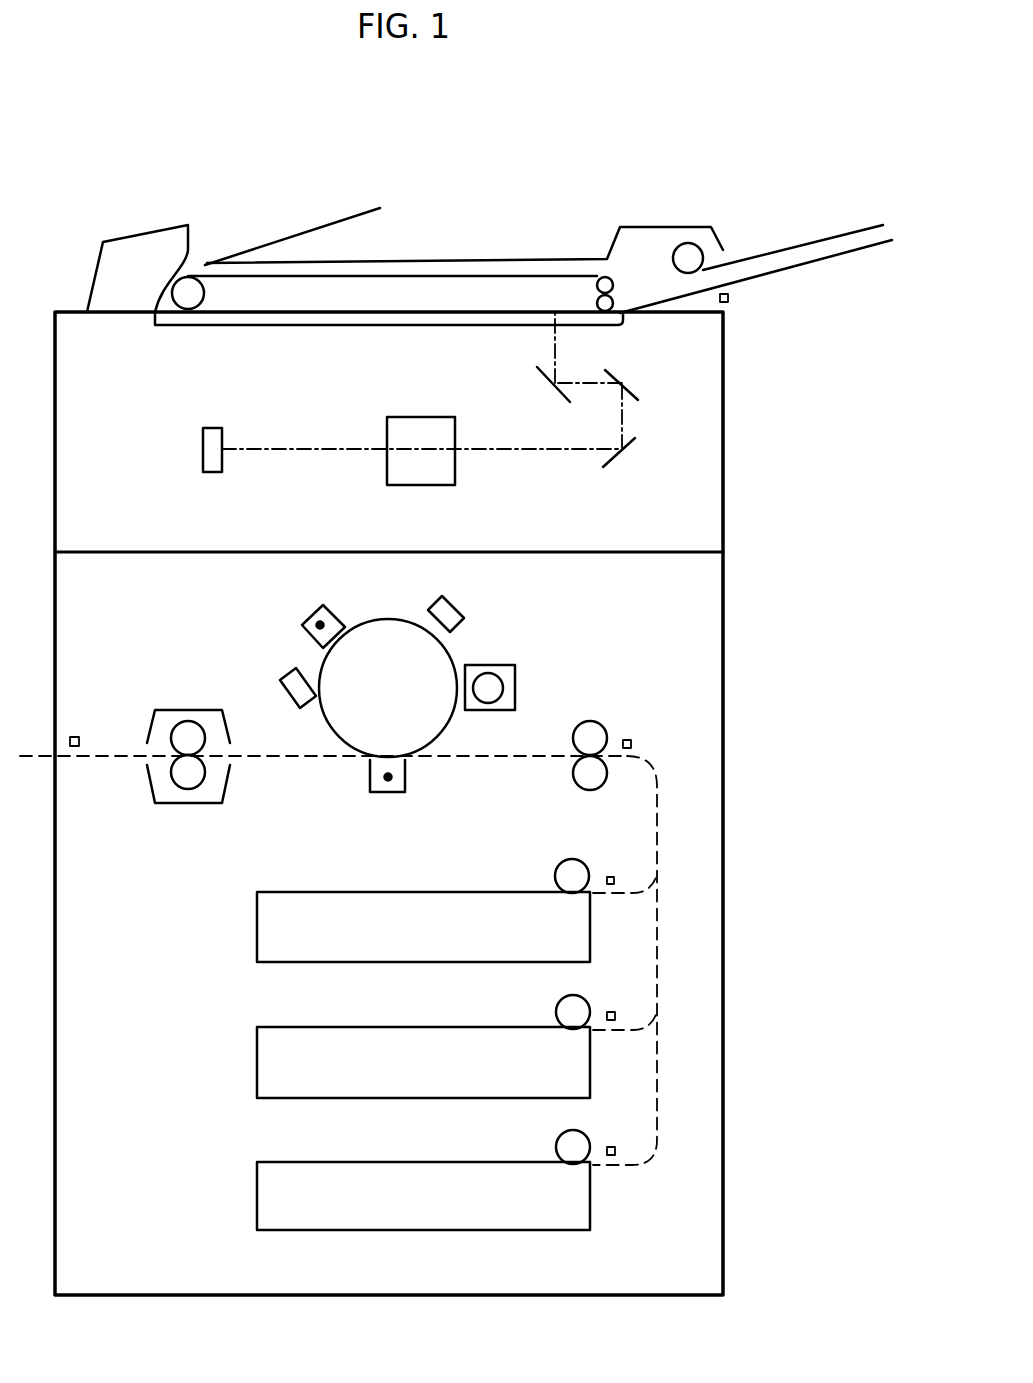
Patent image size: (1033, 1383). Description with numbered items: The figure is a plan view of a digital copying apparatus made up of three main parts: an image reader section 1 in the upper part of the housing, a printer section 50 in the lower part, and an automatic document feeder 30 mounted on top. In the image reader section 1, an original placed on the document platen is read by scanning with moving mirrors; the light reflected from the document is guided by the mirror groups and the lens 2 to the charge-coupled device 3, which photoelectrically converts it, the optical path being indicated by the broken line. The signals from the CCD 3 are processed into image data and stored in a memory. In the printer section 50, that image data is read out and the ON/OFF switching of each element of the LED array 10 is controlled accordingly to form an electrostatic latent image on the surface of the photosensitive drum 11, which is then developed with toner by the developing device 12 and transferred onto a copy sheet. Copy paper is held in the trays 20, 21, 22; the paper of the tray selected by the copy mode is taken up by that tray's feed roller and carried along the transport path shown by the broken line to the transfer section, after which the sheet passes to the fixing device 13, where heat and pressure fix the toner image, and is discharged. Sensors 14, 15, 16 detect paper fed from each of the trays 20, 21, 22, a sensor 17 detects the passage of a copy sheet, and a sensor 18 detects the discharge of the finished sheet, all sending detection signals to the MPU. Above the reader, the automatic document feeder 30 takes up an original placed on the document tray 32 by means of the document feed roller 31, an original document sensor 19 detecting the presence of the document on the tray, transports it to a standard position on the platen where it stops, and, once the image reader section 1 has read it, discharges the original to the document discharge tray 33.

The image reader section 1 is at (707, 437).
The lens 2 is at (422, 422).
The charge-coupled device (CCD) 3 is at (215, 430).
The LED array 10 is at (450, 618).
The photosensitive drum 11 is at (404, 706).
The developing device 12 is at (515, 698).
The fixing device 13 is at (168, 723).
The sensor 14 is at (613, 877).
The sensor 15 is at (612, 1012).
The sensor 16 is at (612, 1147).
The sensor 17 is at (628, 740).
The sensor 18 is at (75, 737).
The original document sensor 19 is at (728, 297).
The tray 20 is at (392, 944).
The tray 21 is at (392, 1084).
The tray 22 is at (392, 1211).
The automatic document feeder (ADF) 30 is at (428, 254).
The document feed roller 31 is at (693, 255).
The document tray 32 is at (833, 253).
The document discharge tray 33 is at (285, 240).
The printer section 50 is at (708, 657).